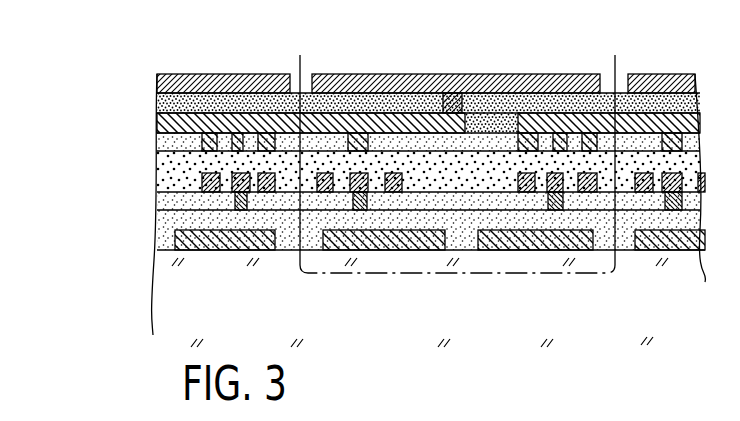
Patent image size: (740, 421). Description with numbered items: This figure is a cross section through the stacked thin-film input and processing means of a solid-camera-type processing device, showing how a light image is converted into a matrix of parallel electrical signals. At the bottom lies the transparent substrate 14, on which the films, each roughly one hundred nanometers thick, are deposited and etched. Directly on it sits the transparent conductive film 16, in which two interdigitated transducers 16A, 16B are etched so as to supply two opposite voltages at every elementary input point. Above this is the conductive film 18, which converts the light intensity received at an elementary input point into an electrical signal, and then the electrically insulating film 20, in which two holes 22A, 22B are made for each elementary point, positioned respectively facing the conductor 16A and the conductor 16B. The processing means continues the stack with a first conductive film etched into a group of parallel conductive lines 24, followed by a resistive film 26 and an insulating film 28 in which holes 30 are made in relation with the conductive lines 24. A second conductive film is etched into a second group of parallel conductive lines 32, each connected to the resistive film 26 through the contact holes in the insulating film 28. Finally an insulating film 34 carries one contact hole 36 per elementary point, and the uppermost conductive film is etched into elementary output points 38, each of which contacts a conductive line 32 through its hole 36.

The transparent substrate 14 is at (167, 278).
The transparent conductive film 16 is at (150, 248).
The interdigitated transducer 16A is at (385, 251).
The interdigitated transducer 16B is at (519, 251).
The conductive film 18 is at (150, 230).
The electrically insulating film 20 is at (150, 190).
The hole 22A is at (354, 204).
The hole 22B is at (238, 196).
The parallel conductive lines 24 is at (146, 182).
The resistive film 26 is at (150, 170).
The insulating film 28 is at (150, 132).
The hole 30 is at (250, 133).
The second group of parallel conductive lines 32 is at (150, 113).
The insulating film 34 is at (150, 92).
The contact hole 36 is at (451, 108).
The elementary output point 38 is at (150, 75).